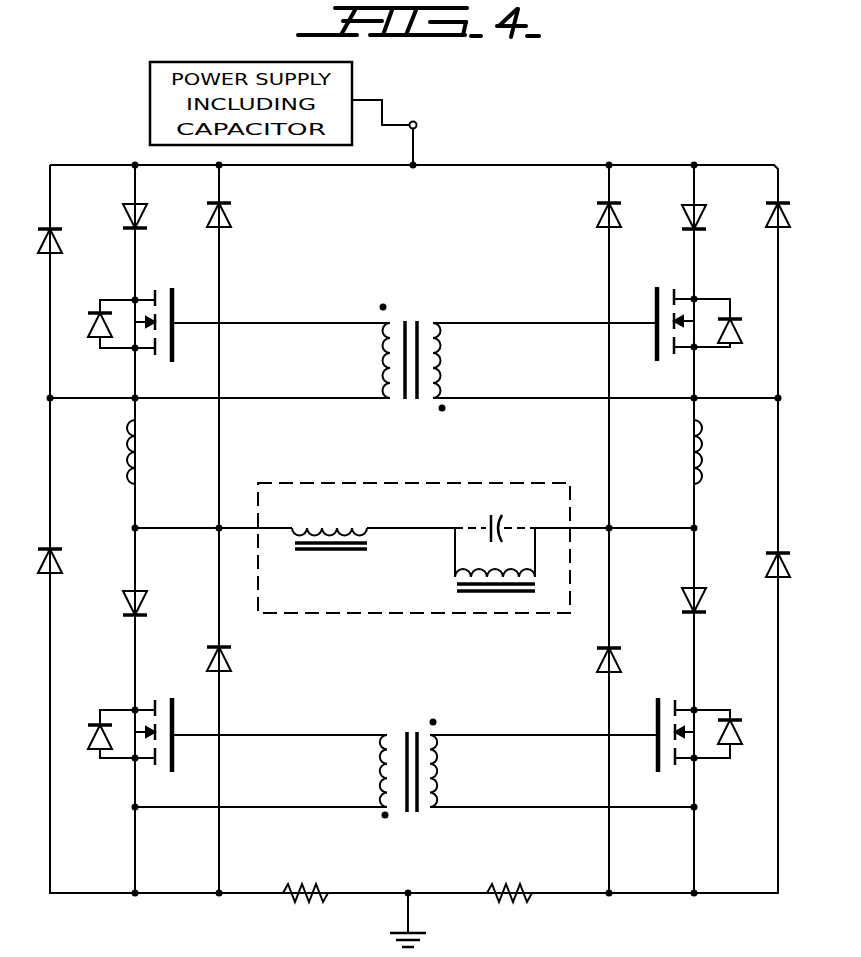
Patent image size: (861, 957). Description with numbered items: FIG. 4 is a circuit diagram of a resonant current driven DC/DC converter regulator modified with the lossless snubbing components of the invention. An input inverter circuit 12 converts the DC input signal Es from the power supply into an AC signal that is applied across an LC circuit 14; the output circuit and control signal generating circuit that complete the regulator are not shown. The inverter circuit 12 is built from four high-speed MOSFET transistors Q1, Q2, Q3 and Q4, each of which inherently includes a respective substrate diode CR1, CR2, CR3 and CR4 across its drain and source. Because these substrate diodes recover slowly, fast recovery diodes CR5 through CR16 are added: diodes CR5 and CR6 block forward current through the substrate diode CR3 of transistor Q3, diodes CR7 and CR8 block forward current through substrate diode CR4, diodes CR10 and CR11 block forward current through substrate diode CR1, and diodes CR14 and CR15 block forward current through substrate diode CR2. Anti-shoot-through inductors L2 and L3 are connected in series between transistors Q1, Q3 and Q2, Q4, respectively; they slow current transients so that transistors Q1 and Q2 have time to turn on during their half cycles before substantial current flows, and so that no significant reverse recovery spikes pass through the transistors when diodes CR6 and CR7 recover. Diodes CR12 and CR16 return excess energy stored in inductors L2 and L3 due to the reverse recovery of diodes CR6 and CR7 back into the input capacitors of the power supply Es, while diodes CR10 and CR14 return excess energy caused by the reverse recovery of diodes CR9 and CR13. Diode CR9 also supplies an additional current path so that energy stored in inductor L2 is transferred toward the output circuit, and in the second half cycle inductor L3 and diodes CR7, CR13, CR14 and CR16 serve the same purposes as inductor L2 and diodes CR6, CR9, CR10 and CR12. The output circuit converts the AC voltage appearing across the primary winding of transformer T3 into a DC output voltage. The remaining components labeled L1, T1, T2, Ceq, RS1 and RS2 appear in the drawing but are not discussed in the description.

The input inverter circuit 12 is at (664, 110).
The LC circuit 14 is at (400, 464).
The DC input signal Es is at (386, 125).
The MOSFET transistor Q1 is at (165, 278).
The MOSFET transistor Q2 is at (644, 293).
The MOSFET transistor Q3 is at (184, 755).
The MOSFET transistor Q4 is at (644, 749).
The substrate diode CR1 is at (94, 330).
The substrate diode CR2 is at (741, 332).
The substrate diode CR3 is at (93, 739).
The substrate diode CR4 is at (741, 736).
The fast recovery diode CR5 is at (147, 604).
The fast recovery diode CR6 is at (232, 661).
The fast recovery diode CR7 is at (600, 663).
The fast recovery diode CR8 is at (686, 601).
The fast recovery diode CR9 is at (30, 576).
The fast recovery diode CR10 is at (60, 240).
The fast recovery diode CR11 is at (142, 219).
The fast recovery diode CR12 is at (229, 216).
The fast recovery diode CR13 is at (769, 565).
The fast recovery diode CR14 is at (770, 213).
The fast recovery diode CR15 is at (686, 213).
The fast recovery diode CR16 is at (604, 216).
The resonant inductor L1 is at (345, 505).
The anti-shoot-through inductor L2 is at (113, 428).
The anti-shoot-through inductor L3 is at (705, 460).
The transformer T1 is at (413, 350).
The transformer T2 is at (414, 759).
The transformer T3 is at (476, 564).
The equivalent capacitance Ceq is at (495, 517).
The sensing resistor RS1 is at (519, 882).
The sensing resistor RS2 is at (315, 882).